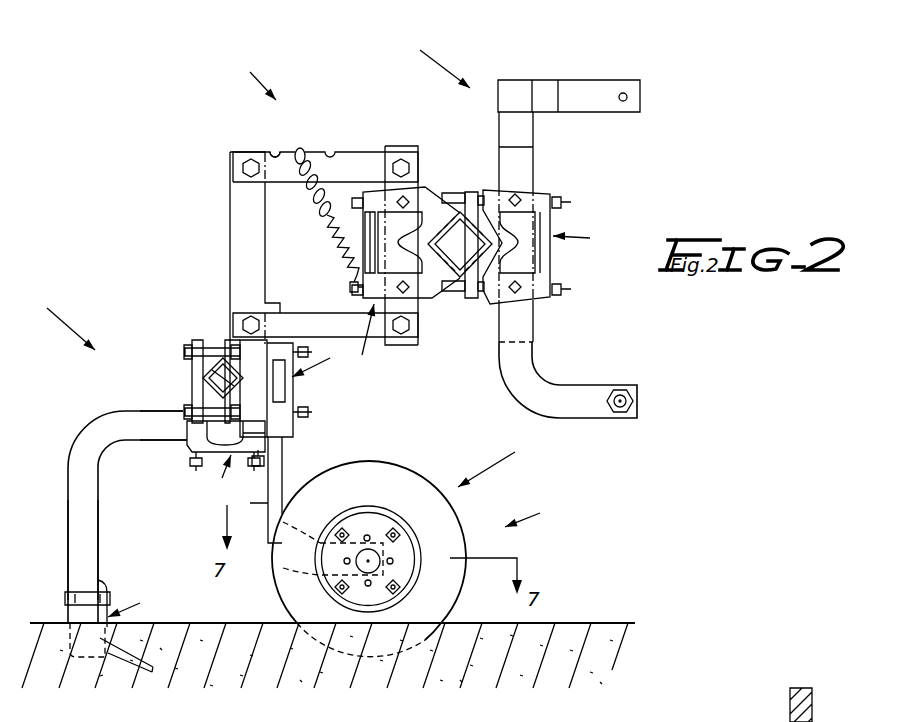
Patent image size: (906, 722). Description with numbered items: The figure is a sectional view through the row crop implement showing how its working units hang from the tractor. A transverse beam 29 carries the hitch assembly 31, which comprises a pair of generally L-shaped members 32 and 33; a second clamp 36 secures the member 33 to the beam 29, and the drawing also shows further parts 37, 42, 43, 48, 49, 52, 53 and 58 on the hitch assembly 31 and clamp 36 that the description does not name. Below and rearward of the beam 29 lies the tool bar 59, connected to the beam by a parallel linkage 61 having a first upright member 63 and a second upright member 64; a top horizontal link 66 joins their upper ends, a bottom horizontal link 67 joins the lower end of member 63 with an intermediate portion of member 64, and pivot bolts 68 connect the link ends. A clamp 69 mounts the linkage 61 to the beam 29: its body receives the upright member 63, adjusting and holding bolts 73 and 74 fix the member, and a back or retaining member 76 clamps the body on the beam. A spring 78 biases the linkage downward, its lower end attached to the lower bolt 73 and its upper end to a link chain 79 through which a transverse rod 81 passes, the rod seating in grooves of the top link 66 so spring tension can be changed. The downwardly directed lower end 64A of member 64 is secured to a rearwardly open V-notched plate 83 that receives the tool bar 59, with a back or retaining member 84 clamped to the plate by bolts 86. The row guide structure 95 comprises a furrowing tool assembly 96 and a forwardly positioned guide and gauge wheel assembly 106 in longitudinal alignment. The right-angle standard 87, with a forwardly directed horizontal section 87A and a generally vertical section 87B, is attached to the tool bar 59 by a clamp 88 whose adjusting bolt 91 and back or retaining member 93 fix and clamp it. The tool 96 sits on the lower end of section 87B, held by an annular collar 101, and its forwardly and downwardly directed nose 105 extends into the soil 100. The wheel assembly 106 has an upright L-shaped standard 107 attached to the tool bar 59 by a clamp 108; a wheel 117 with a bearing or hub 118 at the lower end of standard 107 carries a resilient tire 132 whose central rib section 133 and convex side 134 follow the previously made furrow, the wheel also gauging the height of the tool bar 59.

The transverse beam 29 is at (460, 244).
The hitch assembly 31 is at (442, 62).
The L-shaped member 32 is at (278, 151).
The L-shaped member 33 is at (580, 385).
The second clamp 36 is at (488, 242).
The clamp plate 37 is at (545, 303).
The bolt 42 is at (565, 203).
The bolt hole 43 is at (525, 200).
The nut 48 is at (634, 405).
The bolt 49 is at (630, 396).
The vertical tube 52 is at (525, 132).
The horizontal arm 53 is at (582, 78).
The hole 58 is at (628, 96).
The tool bar 59 is at (212, 382).
The parallel linkage 61 is at (250, 81).
The first upright member 63 is at (392, 146).
The second upright member 64 is at (240, 226).
The lower end 64A is at (258, 390).
The top horizontal link 66 is at (345, 160).
The bottom horizontal link 67 is at (336, 318).
The pivot bolts 68 is at (405, 160).
The clamp 69 is at (374, 340).
The adjusting and holding bolt 73 is at (350, 286).
The adjusting and holding bolt 74 is at (406, 200).
The back or retaining member 76 is at (472, 192).
The spring 78 is at (332, 236).
The link chain 79 is at (315, 196).
The transverse rod 81 is at (300, 148).
The V-notched plate 83 is at (242, 398).
The back or retaining member 84 is at (195, 368).
The bolts 86 is at (203, 348).
The standard 87 is at (76, 492).
The horizontal section 87A is at (133, 410).
The vertical section 87B is at (98, 522).
The clamp 88 is at (226, 459).
The adjusting bolt 91 is at (196, 470).
The back or retaining member 93 is at (224, 718).
The row guide structure 95 is at (58, 322).
The furrowing tool assembly 96 is at (116, 623).
The soil 100 is at (238, 640).
The collar 101 is at (102, 593).
The nose 105 is at (120, 680).
The guide and gauge wheel assembly 106 is at (394, 545).
The L-shaped standard 107 is at (276, 478).
The clamp 108 is at (311, 388).
The wheel 117 is at (517, 518).
The bearing or hub 118 is at (368, 558).
The resilient tire 132 is at (750, 714).
The rib section 133 is at (442, 508).
The convex side 134 is at (442, 590).